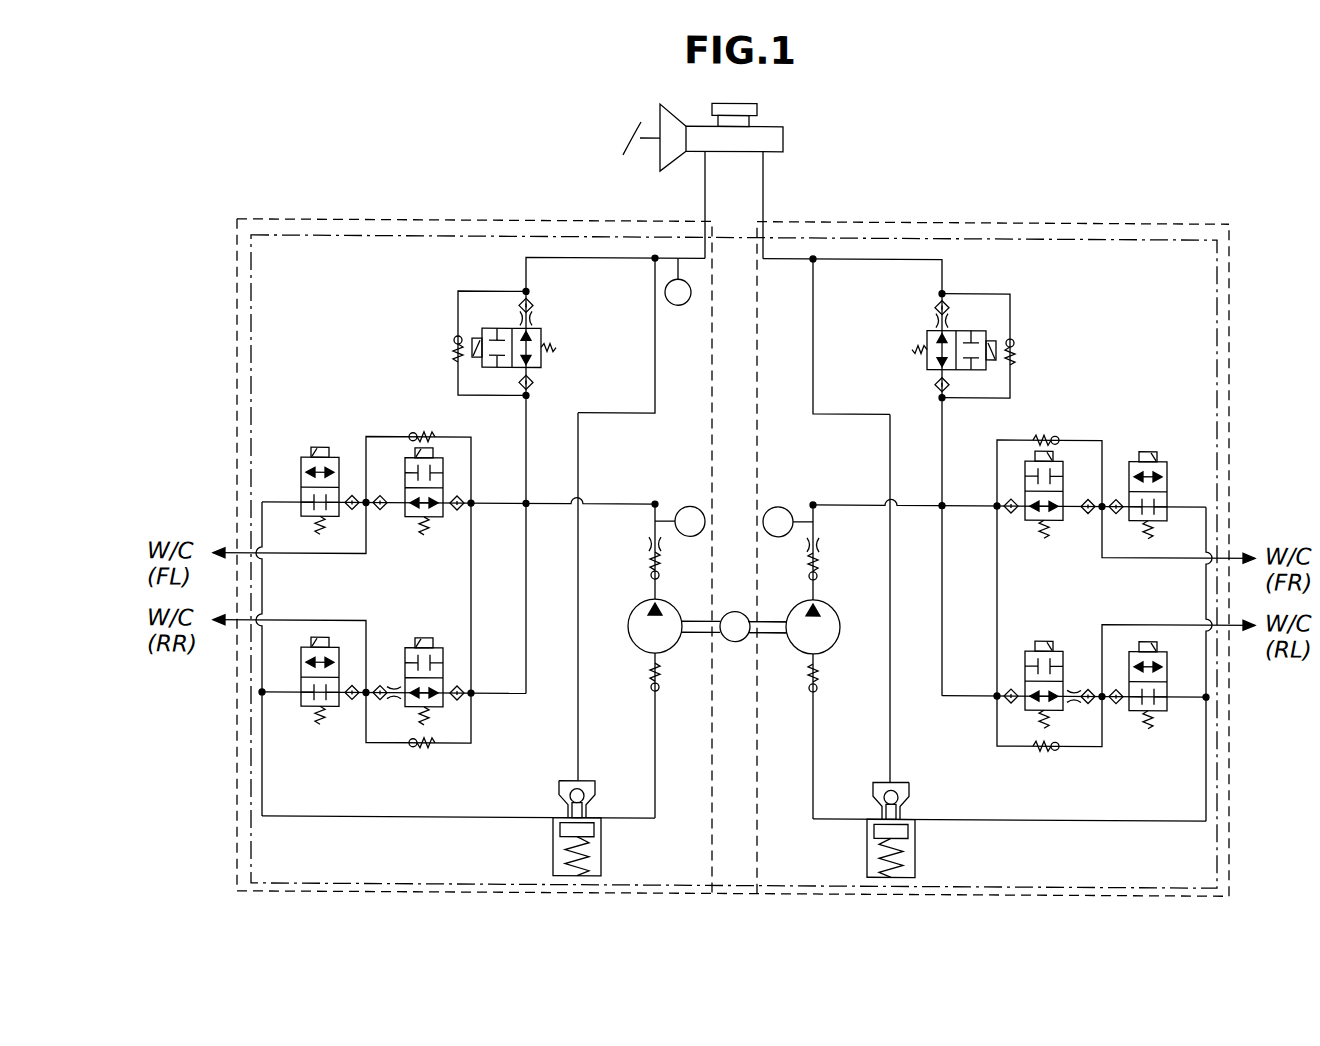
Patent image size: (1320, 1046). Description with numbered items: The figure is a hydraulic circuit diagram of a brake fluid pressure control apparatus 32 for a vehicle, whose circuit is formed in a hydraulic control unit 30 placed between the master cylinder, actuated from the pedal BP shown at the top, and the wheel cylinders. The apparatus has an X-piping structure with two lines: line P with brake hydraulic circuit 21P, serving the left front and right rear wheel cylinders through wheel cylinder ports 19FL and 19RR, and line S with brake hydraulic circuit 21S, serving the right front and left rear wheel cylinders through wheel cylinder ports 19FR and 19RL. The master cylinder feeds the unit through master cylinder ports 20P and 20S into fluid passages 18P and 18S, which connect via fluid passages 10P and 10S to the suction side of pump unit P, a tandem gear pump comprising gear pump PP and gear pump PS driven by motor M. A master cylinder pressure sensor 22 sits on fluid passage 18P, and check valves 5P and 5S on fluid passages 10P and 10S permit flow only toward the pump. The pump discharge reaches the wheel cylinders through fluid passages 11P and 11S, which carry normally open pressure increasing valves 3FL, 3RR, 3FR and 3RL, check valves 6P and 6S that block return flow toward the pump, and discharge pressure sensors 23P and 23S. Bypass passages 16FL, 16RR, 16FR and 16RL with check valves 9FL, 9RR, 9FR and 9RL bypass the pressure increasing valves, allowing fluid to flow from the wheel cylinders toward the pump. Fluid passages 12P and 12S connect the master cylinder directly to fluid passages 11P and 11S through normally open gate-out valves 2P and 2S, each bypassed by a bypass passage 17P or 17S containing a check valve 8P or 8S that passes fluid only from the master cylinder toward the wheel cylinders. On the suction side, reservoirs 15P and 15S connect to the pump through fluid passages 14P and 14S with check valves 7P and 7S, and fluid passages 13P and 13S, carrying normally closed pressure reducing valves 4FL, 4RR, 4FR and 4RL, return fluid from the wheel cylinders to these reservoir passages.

The brake pedal BP is at (630, 148).
The brake fluid pressure control apparatus 32 is at (1228, 224).
The hydraulic control unit 30 is at (1165, 238).
The brake hydraulic circuit 21P is at (383, 218).
The brake hydraulic circuit 21S is at (1087, 220).
The fluid passage 18P is at (573, 257).
The fluid passage 18S is at (897, 257).
The master cylinder port 20P is at (705, 235).
The master cylinder port 20S is at (764, 235).
The fluid passage 10P is at (655, 380).
The fluid passage 10S is at (813, 380).
The master cylinder pressure sensor 22 is at (678, 305).
The bypass passage 17P is at (458, 310).
The bypass passage 17S is at (1010, 310).
The gate-out valve 2P is at (538, 325).
The gate-out valve 2S is at (930, 325).
The check valve 8P is at (456, 340).
The check valve 8S is at (1012, 340).
The fluid passage 12P is at (535, 410).
The fluid passage 12S is at (932, 410).
The fluid passage 11P is at (622, 503).
The fluid passage 11S is at (846, 503).
The discharge pressure sensor 23P is at (690, 505).
The discharge pressure sensor 23S is at (778, 505).
The check valve 6P is at (650, 577).
The check valve 6S is at (818, 577).
The gear pump PP is at (662, 606).
The gear pump PS is at (806, 606).
The motor M is at (733, 641).
The pump unit P is at (725, 597).
The check valve 5P is at (650, 692).
The check valve 5S is at (818, 692).
The fluid passage 14P is at (650, 785).
The fluid passage 14S is at (818, 785).
The fluid passage 13P is at (370, 817).
The fluid passage 13S is at (1118, 795).
The check valve 7P is at (568, 792).
The check valve 7S is at (900, 792).
The reservoir 15P is at (553, 838).
The reservoir 15S is at (915, 838).
The pressure reducing valve 4FL is at (305, 458).
The pressure reducing valve 4FR is at (1163, 458).
The pressure reducing valve 4RR is at (315, 712).
The pressure reducing valve 4RL is at (1153, 712).
The pressure increasing valve 3FL is at (407, 515).
The pressure increasing valve 3FR is at (1061, 515).
The pressure increasing valve 3RR is at (407, 672).
The pressure increasing valve 3RL is at (1061, 672).
The bypass passage 16FL is at (365, 437).
The bypass passage 16FR is at (1103, 437).
The bypass passage 16RR is at (471, 745).
The bypass passage 16RL is at (997, 745).
The check valve 9FL is at (413, 432).
The check valve 9FR is at (1055, 432).
The check valve 9RR is at (413, 748).
The check valve 9RL is at (1055, 748).
The wheel cylinder port 19FL is at (250, 550).
The wheel cylinder port 19FR is at (1218, 550).
The wheel cylinder port 19RR is at (250, 627).
The wheel cylinder port 19RL is at (1218, 630).